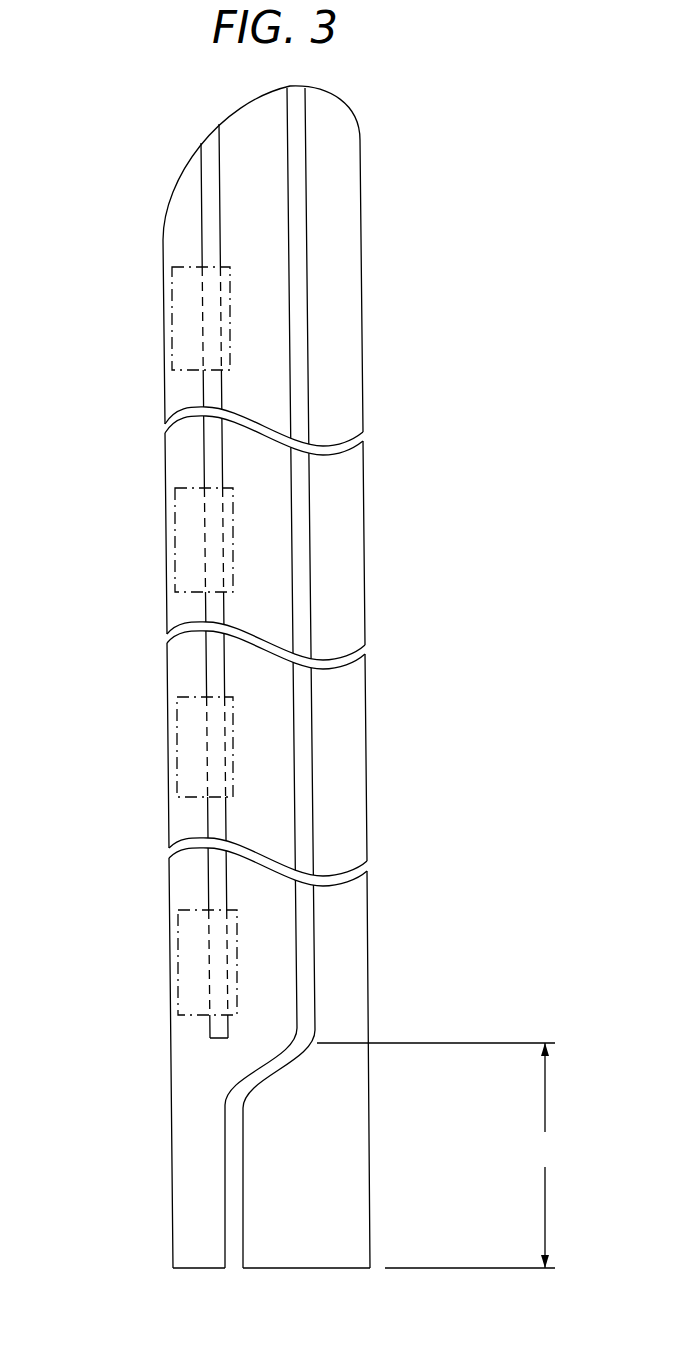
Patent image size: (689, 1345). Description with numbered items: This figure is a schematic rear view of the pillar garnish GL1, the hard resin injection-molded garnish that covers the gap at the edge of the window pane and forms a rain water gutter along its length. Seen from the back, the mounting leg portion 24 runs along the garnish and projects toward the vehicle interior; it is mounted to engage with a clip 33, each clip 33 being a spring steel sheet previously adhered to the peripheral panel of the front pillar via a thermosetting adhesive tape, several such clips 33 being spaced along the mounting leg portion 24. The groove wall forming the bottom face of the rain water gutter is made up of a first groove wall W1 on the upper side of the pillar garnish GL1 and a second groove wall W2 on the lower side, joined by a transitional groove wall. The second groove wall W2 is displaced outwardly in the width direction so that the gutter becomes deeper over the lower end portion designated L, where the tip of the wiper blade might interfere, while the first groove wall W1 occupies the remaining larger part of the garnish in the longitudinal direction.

The pillar garnish GL1 is at (384, 386).
The first groove wall W1 is at (305, 547).
The second groove wall W2 is at (232, 1158).
The lower end portion L is at (436, 1155).
The mounting leg portion 24 is at (213, 678).
The clip 33 is at (187, 525).